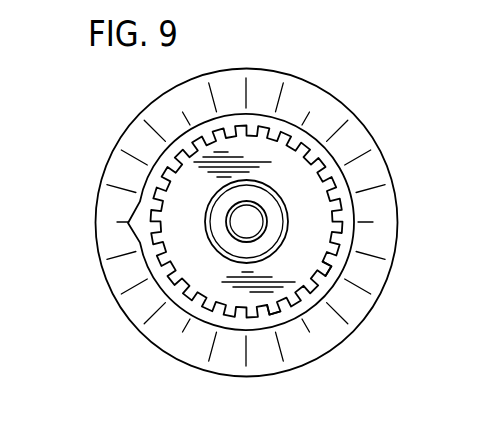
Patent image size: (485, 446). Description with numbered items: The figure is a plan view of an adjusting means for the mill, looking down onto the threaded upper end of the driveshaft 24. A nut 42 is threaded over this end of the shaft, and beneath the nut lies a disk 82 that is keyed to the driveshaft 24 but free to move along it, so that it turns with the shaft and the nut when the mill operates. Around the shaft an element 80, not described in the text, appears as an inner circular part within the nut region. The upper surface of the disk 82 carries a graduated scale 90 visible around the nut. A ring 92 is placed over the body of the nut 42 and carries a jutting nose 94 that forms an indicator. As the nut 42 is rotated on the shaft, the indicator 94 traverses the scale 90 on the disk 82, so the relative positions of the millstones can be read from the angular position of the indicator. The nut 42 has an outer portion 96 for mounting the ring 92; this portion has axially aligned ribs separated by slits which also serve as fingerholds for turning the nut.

The driveshaft 24 is at (257, 222).
The nut 42 is at (300, 252).
The hub 80 is at (265, 208).
The disk 82 is at (371, 133).
The graduated scale 90 is at (329, 183).
The ring 92 is at (328, 278).
The jutting nose 94 is at (130, 226).
The outer portion 96 is at (273, 310).